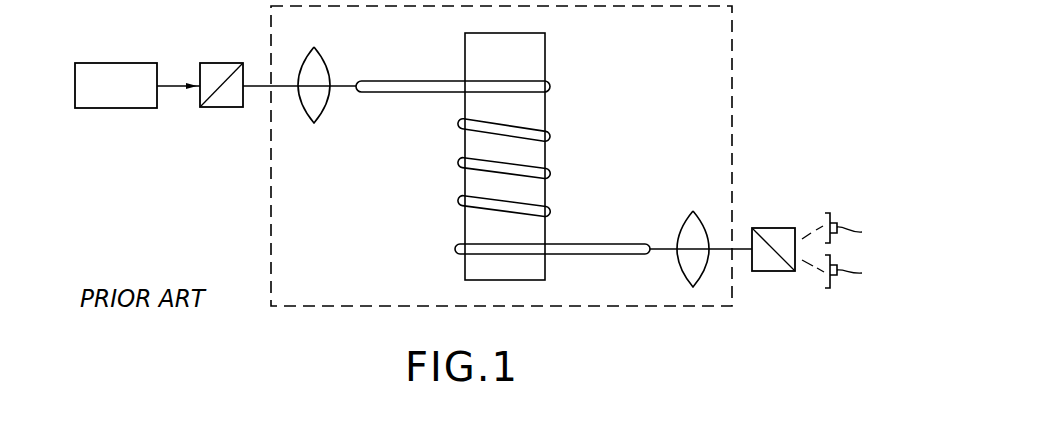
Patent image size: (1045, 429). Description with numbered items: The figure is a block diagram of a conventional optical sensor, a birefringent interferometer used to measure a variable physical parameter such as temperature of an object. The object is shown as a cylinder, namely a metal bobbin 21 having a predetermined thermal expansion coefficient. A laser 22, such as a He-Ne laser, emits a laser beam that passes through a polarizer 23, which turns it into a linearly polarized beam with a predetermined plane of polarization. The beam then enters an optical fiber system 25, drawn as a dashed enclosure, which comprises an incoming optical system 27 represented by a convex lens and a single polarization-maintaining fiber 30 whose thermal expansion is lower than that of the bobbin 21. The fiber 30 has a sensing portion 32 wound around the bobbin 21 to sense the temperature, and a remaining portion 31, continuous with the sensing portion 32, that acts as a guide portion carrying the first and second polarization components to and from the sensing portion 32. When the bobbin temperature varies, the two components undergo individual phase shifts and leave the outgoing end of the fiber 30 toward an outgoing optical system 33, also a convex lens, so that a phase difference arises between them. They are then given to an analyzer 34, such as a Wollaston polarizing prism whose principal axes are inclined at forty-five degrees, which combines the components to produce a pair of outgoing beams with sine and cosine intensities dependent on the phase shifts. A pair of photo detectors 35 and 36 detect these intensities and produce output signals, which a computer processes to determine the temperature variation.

The bobbin 21 is at (545, 58).
The laser 22 is at (120, 63).
The polarizer 23 is at (223, 63).
The optical fiber system 25 is at (732, 68).
The incoming optical system 27 is at (322, 50).
The polarization-maintaining fiber 30 is at (425, 98).
The remaining portion 31 is at (392, 112).
The sensing portion 32 is at (530, 99).
The outgoing optical system 33 is at (690, 213).
The analyzer 34 is at (772, 228).
The photo detector 35 is at (826, 212).
The photo detector 36 is at (826, 289).